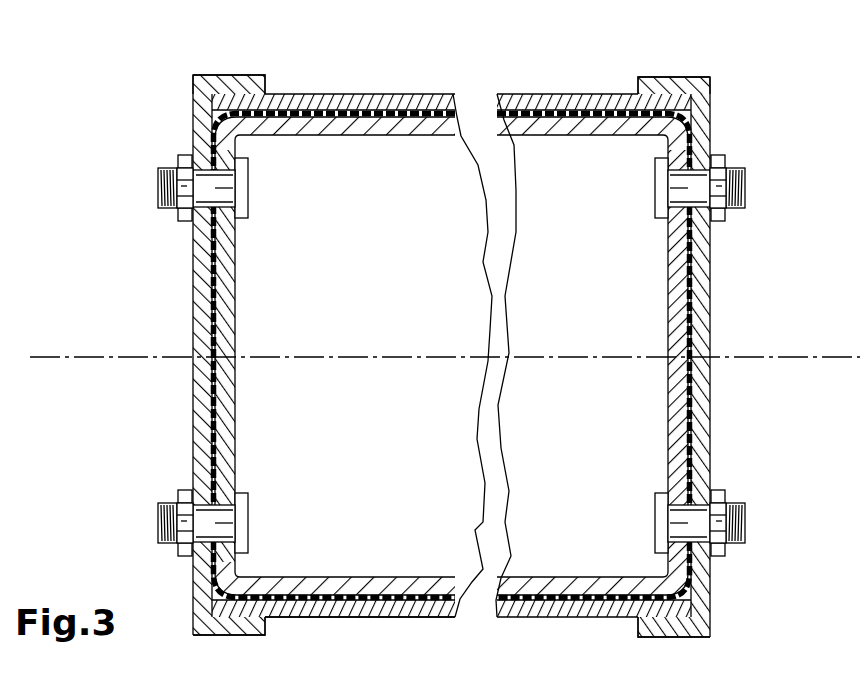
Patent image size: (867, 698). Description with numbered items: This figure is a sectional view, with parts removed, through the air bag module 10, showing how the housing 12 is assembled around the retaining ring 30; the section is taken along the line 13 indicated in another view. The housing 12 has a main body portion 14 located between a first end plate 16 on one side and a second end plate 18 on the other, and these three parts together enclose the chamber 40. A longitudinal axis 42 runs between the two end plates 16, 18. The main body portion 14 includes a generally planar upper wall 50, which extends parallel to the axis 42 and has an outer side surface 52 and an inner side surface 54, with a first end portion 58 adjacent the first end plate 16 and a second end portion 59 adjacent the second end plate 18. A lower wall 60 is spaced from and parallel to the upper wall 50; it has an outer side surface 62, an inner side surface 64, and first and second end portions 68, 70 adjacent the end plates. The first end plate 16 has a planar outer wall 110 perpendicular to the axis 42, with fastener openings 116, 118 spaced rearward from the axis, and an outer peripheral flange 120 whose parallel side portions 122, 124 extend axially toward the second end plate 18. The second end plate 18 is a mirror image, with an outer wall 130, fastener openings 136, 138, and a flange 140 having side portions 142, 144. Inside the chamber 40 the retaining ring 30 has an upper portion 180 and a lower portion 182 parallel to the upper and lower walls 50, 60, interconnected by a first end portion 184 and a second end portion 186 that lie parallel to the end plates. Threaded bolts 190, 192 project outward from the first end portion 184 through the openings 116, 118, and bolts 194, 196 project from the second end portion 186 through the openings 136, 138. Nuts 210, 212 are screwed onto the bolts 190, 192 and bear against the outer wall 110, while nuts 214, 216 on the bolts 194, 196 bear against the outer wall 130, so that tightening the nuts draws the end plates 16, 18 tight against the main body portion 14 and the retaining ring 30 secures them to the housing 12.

The air bag module 10 is at (343, 38).
The housing 12 is at (409, 73).
The bottom wall section 13 is at (360, 657).
The main body portion 14 is at (572, 88).
The first end plate 16 is at (190, 262).
The second end plate 18 is at (714, 296).
The retaining ring 30 is at (540, 138).
The chamber 40 is at (378, 216).
The axis 42 is at (398, 357).
The upper wall 50 is at (526, 90).
The outer side surface 52 is at (367, 95).
The inner side surface 54 is at (295, 116).
The first end portion 58 is at (235, 100).
The second end portion 59 is at (672, 93).
The lower wall 60 is at (549, 622).
The outer side surface 62 is at (392, 618).
The inner side surface 64 is at (410, 577).
The first end portion 68 is at (242, 620).
The second end portion 70 is at (655, 636).
The outer wall 110 is at (193, 463).
The fastener opening 116 is at (172, 190).
The fastener opening 118 is at (175, 540).
The outer peripheral flange 120 is at (203, 72).
The side portion 122 is at (240, 115).
The side portion 124 is at (228, 628).
The outer wall 130 is at (712, 380).
The fastener opening 136 is at (730, 195).
The fastener opening 138 is at (735, 535).
The outer peripheral flange 140 is at (663, 74).
The side portion 142 is at (702, 82).
The side portion 144 is at (702, 636).
The upper portion 180 is at (595, 130).
The lower portion 182 is at (580, 578).
The first end portion 184 is at (237, 388).
The second end portion 186 is at (668, 410).
The fastener 190 is at (172, 170).
The fastener 192 is at (176, 508).
The fastener 194 is at (745, 180).
The fastener 196 is at (740, 515).
The nut 210 is at (183, 157).
The nut 212 is at (183, 560).
The nut 214 is at (722, 157).
The nut 216 is at (720, 558).